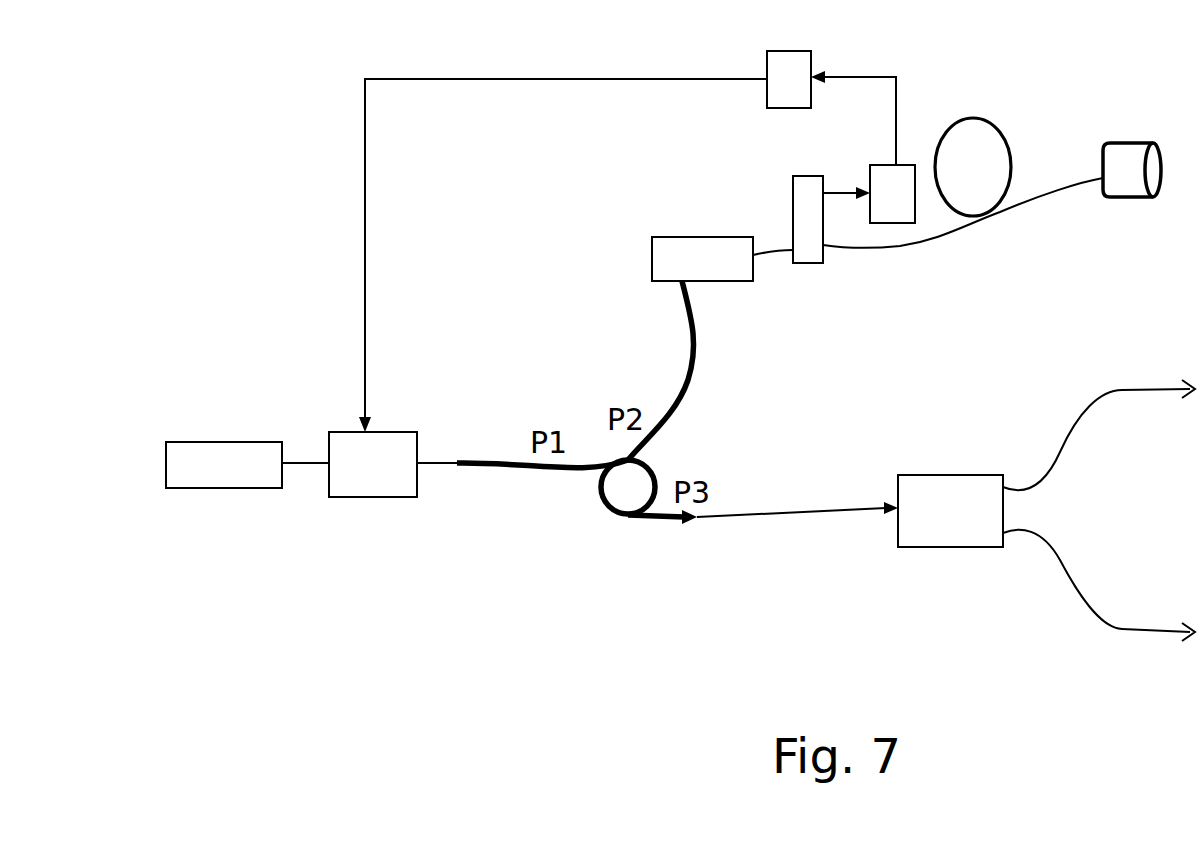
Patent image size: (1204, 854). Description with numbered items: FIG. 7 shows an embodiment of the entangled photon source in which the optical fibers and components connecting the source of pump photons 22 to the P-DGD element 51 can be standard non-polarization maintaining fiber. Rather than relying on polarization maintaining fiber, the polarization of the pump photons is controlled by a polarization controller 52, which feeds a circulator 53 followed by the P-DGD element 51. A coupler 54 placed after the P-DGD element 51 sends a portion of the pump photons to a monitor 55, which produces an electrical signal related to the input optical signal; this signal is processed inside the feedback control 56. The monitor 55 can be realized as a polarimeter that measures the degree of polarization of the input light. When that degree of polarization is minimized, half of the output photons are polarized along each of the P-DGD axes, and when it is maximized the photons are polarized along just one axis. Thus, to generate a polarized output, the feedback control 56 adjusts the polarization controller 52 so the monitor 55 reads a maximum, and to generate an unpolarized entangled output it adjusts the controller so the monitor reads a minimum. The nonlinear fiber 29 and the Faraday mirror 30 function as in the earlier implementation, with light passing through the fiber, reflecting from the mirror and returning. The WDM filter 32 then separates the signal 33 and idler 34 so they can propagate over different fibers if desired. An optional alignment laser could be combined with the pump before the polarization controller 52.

The source of pump photons 22 is at (224, 469).
The polarization controller 52 is at (373, 487).
The circulator 53 is at (619, 505).
The P-DGD element 51 is at (695, 242).
The coupler 54 is at (791, 209).
The monitor 55 is at (886, 175).
The feedback control 56 is at (791, 56).
The nonlinear fiber 29 is at (1004, 139).
The Faraday mirror 30 is at (1127, 184).
The WDM filter 32 is at (950, 495).
The signal 33 is at (1086, 417).
The idler 34 is at (1091, 603).